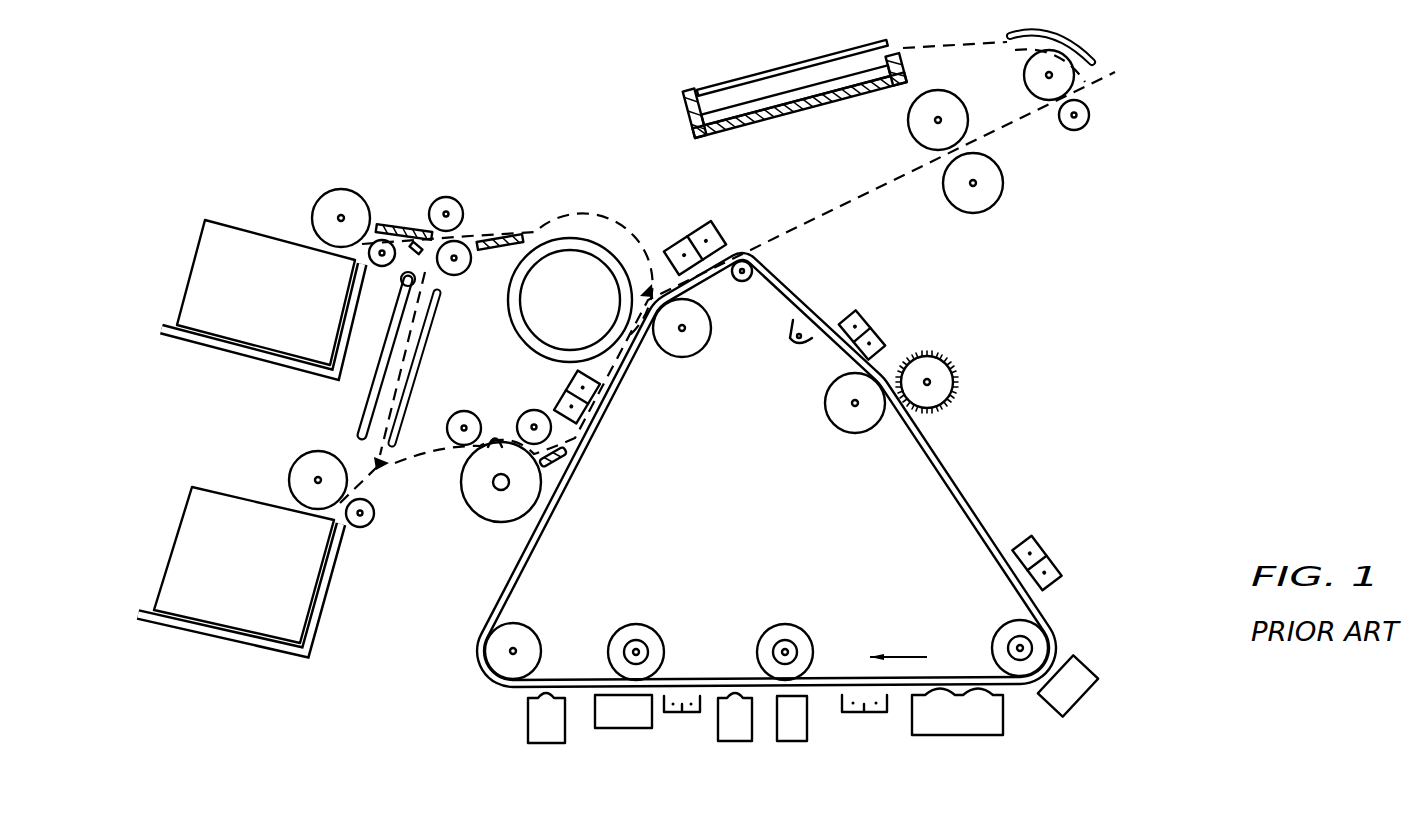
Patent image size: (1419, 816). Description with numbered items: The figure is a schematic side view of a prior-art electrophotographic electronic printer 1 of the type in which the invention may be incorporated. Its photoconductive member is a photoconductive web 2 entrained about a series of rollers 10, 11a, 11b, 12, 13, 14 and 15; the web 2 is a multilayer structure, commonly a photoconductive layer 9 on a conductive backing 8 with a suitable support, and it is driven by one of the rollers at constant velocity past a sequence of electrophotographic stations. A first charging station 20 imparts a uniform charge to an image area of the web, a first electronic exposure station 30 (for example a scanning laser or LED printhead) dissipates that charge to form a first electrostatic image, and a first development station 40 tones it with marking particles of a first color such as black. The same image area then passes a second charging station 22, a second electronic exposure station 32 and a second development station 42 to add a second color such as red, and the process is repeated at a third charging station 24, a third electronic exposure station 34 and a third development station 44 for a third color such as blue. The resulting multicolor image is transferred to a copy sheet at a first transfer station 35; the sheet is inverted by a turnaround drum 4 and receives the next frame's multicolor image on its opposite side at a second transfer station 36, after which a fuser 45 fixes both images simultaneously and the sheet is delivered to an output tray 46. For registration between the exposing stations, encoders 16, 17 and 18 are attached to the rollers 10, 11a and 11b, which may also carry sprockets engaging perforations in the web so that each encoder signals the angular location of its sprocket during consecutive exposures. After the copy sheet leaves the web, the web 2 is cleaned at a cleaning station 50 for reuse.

The electronic printer 1 is at (636, 392).
The photoconductive web 2 is at (766, 470).
The turnaround drum 4 is at (533, 303).
The conductive backing 8 is at (766, 470).
The photoconductive layer 9 is at (766, 470).
The roller 10 is at (1036, 625).
The roller 11a is at (821, 617).
The roller 11b is at (668, 617).
The roller 12 is at (535, 624).
The roller 13 is at (671, 356).
The roller 14 is at (781, 262).
The roller 15 is at (818, 411).
The encoder 16 is at (1053, 630).
The encoder 17 is at (821, 637).
The encoder 18 is at (668, 637).
The first charging station 20 is at (1063, 547).
The second charging station 22 is at (864, 735).
The third charging station 24 is at (679, 736).
The first electronic exposure station 30 is at (1107, 689).
The second electronic exposure station 32 is at (788, 751).
The third electronic exposure station 34 is at (615, 750).
The first transfer station 35 is at (540, 393).
The second transfer station 36 is at (680, 224).
The first development station 40 is at (957, 749).
The second development station 42 is at (723, 752).
The third development station 44 is at (530, 752).
The fuser 45 is at (1008, 122).
The output tray 46 is at (747, 92).
The cleaning station 50 is at (898, 338).